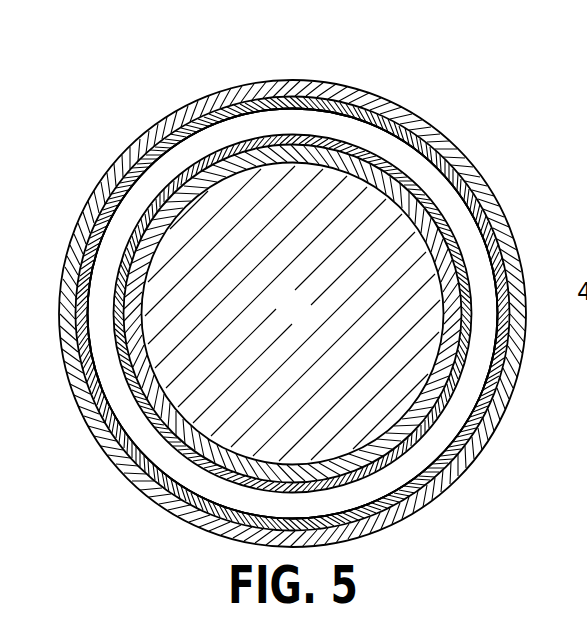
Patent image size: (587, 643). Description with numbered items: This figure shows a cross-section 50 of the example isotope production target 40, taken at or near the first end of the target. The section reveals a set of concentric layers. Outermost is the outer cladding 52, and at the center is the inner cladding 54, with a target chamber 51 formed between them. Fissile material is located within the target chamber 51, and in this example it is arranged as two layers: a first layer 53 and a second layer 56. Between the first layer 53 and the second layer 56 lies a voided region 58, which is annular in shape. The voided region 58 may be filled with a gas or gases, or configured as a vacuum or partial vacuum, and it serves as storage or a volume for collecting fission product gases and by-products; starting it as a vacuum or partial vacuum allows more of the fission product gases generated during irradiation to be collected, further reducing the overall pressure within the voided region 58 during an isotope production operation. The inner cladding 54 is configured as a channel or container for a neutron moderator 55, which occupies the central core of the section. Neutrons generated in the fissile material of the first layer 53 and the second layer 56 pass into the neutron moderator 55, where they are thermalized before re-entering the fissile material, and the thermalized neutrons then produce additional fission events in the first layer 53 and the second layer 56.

The target 40 is at (92, 153).
The cross-section 50 is at (493, 153).
The target chamber 51 is at (376, 133).
The outer cladding 52 is at (293, 80).
The first layer 53 is at (235, 141).
The inner cladding 54 is at (295, 466).
The neutron moderator 55 is at (308, 320).
The second layer 56 is at (345, 513).
The voided region 58 is at (100, 293).